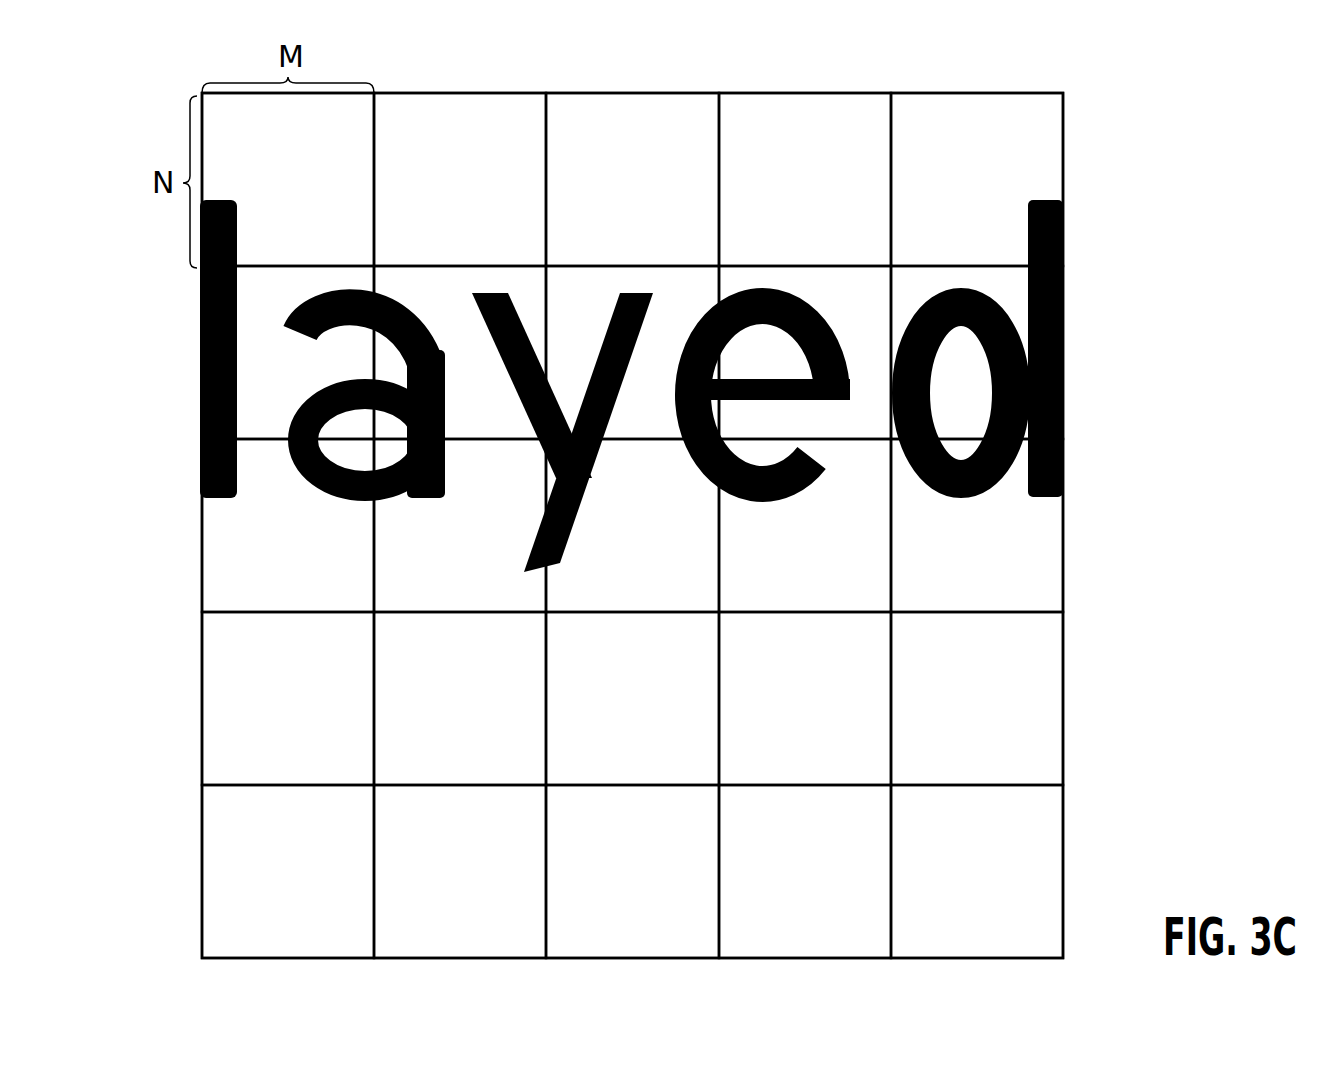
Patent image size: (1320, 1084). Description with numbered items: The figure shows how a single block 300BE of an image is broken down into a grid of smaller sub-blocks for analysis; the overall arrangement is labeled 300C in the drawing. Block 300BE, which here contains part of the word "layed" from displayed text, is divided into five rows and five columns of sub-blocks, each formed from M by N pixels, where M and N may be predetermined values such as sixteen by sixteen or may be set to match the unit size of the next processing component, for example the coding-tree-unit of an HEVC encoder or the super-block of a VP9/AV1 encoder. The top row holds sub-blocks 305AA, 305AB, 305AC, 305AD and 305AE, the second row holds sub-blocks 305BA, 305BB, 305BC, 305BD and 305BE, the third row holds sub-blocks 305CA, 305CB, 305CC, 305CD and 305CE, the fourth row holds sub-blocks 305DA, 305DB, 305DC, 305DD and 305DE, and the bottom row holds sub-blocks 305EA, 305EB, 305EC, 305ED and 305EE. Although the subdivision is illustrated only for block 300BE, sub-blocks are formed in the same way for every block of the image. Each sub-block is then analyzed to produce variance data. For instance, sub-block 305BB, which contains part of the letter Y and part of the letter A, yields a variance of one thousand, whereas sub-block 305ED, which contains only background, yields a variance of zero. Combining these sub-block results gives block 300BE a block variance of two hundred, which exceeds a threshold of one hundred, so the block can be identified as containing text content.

The array of display regions 300C is at (177, 931).
The block 300BE is at (1085, 155).
The sub-block 305AA is at (234, 168).
The sub-block 305AB is at (406, 168).
The sub-block 305AC is at (578, 168).
The sub-block 305AD is at (751, 168).
The sub-block 305AE is at (923, 168).
The sub-block 305BA is at (234, 411).
The sub-block 305BB is at (406, 411).
The sub-block 305BC is at (578, 411).
The sub-block 305BD is at (751, 411).
The sub-block 305BE is at (923, 411).
The sub-block 305CA is at (234, 583).
The sub-block 305CB is at (406, 583).
The sub-block 305CC is at (578, 583).
The sub-block 305CD is at (751, 583).
The sub-block 305CE is at (923, 583).
The sub-block 305DA is at (234, 756).
The sub-block 305DB is at (406, 756).
The sub-block 305DC is at (578, 756).
The sub-block 305DD is at (751, 756).
The sub-block 305DE is at (923, 756).
The sub-block 305EA is at (234, 929).
The sub-block 305EB is at (406, 929).
The sub-block 305EC is at (578, 929).
The sub-block 305ED is at (751, 929).
The sub-block 305EE is at (923, 929).